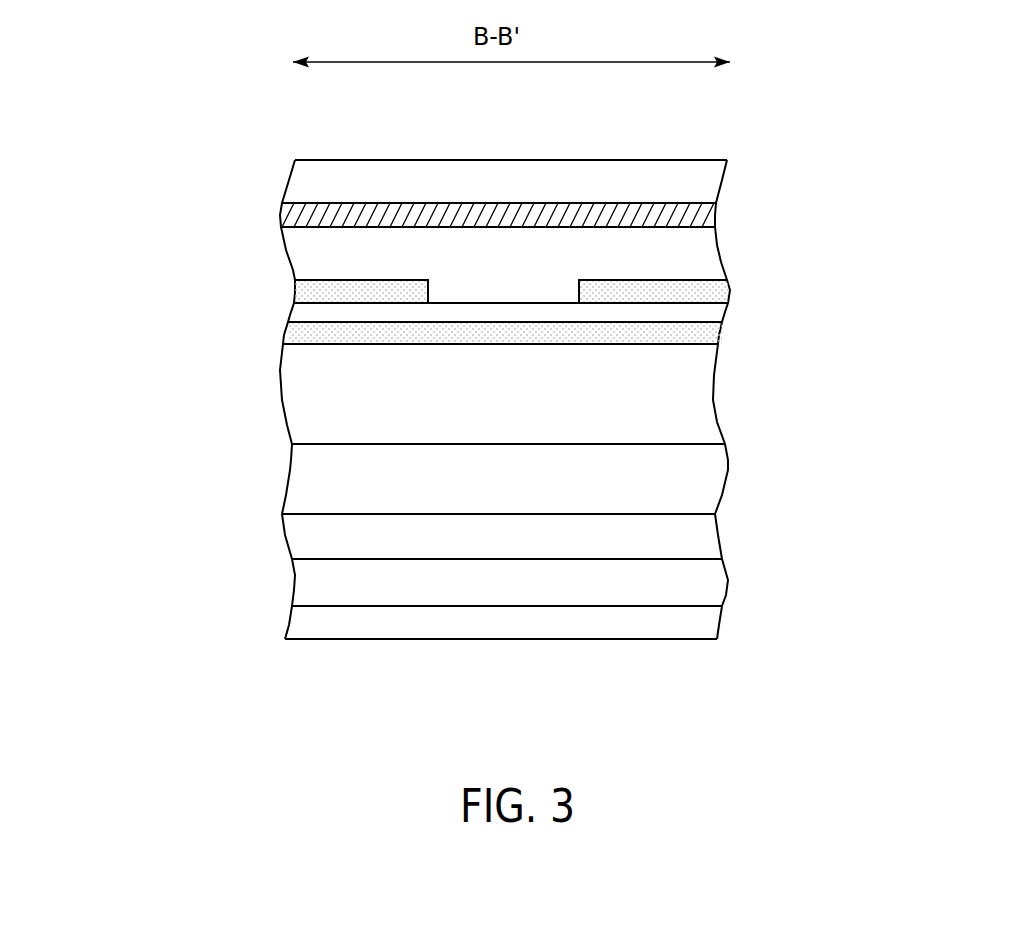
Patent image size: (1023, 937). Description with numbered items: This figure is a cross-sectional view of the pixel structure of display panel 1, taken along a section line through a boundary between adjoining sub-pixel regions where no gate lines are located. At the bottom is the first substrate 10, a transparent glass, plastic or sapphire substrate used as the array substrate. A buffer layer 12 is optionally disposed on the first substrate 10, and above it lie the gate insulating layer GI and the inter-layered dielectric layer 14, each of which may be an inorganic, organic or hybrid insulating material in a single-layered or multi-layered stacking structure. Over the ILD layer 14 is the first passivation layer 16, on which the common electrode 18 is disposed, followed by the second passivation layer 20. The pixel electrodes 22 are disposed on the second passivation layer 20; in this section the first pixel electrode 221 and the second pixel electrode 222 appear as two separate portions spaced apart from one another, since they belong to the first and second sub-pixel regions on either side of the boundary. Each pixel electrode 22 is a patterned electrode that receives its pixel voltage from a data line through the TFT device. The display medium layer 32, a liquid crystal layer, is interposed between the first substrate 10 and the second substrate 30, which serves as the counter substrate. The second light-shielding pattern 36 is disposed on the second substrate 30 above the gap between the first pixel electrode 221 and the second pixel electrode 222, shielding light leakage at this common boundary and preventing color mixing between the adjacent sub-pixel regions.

The pixel structure of display panel 1 is at (588, 368).
The first substrate 10 is at (708, 627).
The buffer layer 12 is at (710, 587).
The gate insulating layer GI is at (712, 543).
The inter-layered dielectric layer 14 is at (712, 482).
The first passivation layer 16 is at (695, 400).
The common electrode 18 is at (712, 333).
The second passivation layer 20 is at (712, 314).
The pixel electrode 22 is at (511, 291).
The first pixel electrode 221 is at (310, 290).
The second pixel electrode 222 is at (720, 288).
The display medium layer 32 is at (706, 252).
The second light-shielding pattern 36 is at (700, 217).
The second substrate 30 is at (695, 170).